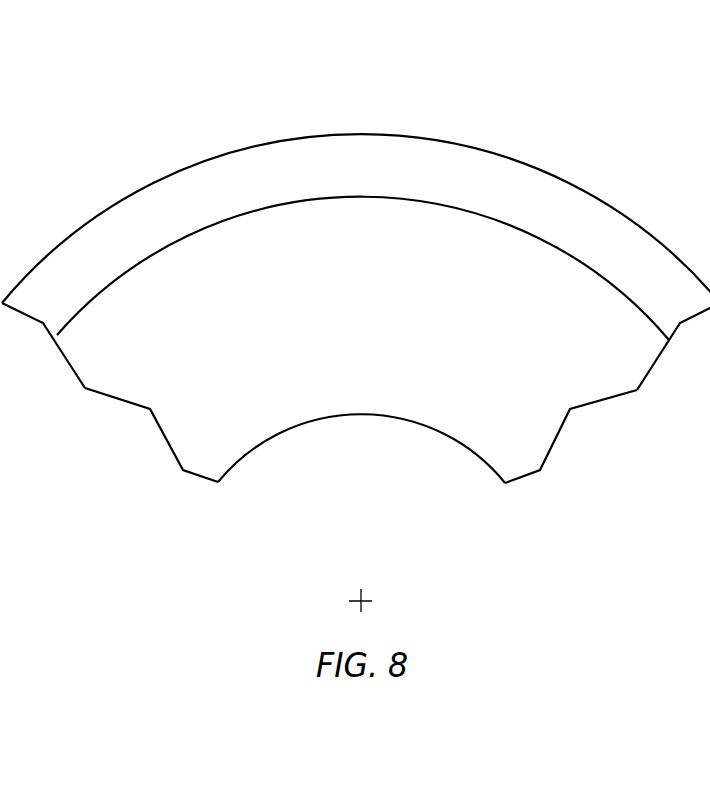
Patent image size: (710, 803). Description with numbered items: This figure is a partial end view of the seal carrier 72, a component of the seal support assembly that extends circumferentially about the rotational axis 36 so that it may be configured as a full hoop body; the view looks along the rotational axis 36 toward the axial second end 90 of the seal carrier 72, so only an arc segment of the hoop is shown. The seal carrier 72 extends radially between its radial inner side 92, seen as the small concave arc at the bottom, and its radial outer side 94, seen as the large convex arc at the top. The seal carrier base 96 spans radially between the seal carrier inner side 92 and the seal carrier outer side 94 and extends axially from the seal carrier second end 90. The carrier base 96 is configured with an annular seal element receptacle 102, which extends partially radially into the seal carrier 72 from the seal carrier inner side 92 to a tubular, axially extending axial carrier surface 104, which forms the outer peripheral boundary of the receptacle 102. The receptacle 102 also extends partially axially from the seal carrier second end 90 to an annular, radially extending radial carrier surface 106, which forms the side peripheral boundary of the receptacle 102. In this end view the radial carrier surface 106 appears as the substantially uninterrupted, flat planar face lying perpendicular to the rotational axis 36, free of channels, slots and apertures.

The rotational axis 36 is at (364, 604).
The seal carrier 72 is at (356, 299).
The axial second end 90 is at (356, 212).
The radial inner side 92 is at (363, 418).
The radial outer side 94 is at (390, 128).
The seal carrier base 96 is at (135, 418).
The seal element receptacle 102 is at (578, 370).
The axial carrier surface 104 is at (313, 198).
The radial carrier surface 106 is at (382, 336).